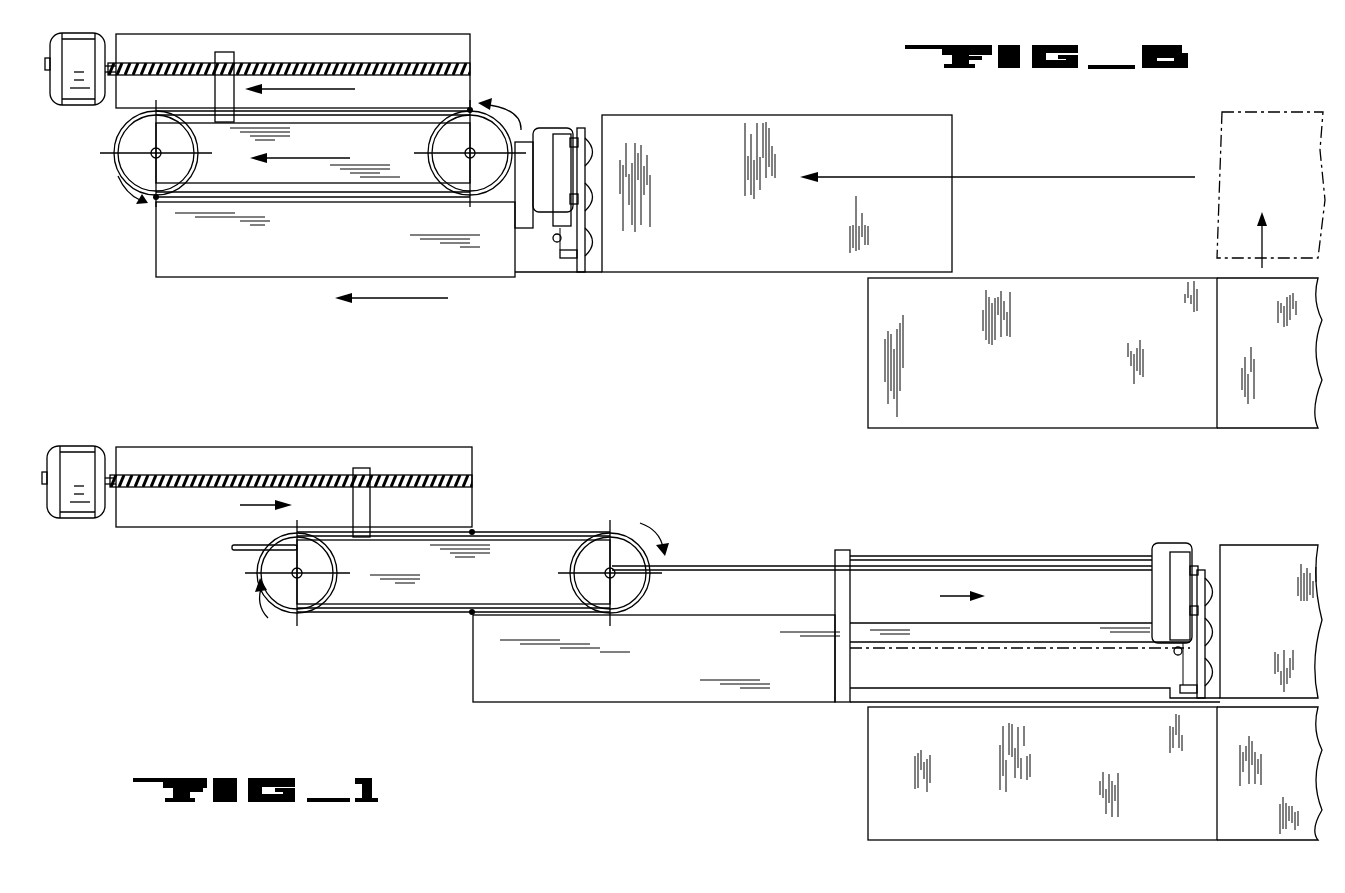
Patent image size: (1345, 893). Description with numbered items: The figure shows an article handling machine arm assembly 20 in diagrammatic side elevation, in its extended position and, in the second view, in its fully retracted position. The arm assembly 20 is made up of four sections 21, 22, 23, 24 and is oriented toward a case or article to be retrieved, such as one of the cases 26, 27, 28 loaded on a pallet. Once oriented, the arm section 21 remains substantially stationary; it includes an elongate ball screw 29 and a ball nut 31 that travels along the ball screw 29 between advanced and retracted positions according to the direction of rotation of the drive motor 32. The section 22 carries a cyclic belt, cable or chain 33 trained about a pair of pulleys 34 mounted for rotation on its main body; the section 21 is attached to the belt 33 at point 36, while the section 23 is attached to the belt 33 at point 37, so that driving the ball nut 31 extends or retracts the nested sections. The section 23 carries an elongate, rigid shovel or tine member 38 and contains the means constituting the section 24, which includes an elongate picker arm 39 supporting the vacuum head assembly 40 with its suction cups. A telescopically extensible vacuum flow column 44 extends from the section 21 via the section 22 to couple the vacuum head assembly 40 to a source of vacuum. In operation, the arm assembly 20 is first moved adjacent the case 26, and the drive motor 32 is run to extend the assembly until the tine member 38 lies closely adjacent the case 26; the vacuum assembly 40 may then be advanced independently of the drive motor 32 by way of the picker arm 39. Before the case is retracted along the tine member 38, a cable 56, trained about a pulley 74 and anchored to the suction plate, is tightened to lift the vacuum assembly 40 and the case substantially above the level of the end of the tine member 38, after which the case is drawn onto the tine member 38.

In FIG. 6, the arm assembly 20 is at (160, 296).
In FIG. 1, the arm assembly 20 is at (250, 660).
In FIG. 6, the arm section 21 is at (480, 80).
In FIG. 1, the arm section 21 is at (450, 438).
In FIG. 6, the section 22 is at (380, 149).
In FIG. 1, the section 22 is at (535, 589).
In FIG. 6, the section 23 is at (348, 246).
In FIG. 1, the section 23 is at (653, 659).
In FIG. 1, the section 24 is at (1032, 632).
In FIG. 6, the case 26 is at (694, 250).
In FIG. 1, the case 26 is at (1290, 632).
In FIG. 6, the case 27 is at (1083, 346).
In FIG. 1, the case 27 is at (1145, 759).
In FIG. 6, the case 28 is at (1303, 386).
In FIG. 1, the case 28 is at (1305, 809).
In FIG. 6, the ball screw 29 is at (178, 62).
In FIG. 1, the ball screw 29 is at (213, 477).
In FIG. 6, the ball nut 31 is at (268, 60).
In FIG. 1, the ball nut 31 is at (372, 502).
In FIG. 6, the drive motor 32 is at (80, 106).
In FIG. 1, the drive motor 32 is at (85, 446).
In FIG. 1, the belt 33 is at (533, 533).
In FIG. 6, the pulleys 34 is at (504, 105).
In FIG. 1, the pulleys 34 is at (258, 557).
In FIG. 1, the attachment point 36 is at (474, 531).
In FIG. 1, the attachment point 37 is at (470, 615).
In FIG. 1, the tine member 38 is at (940, 688).
In FIG. 1, the picker arm 39 is at (903, 632).
In FIG. 6, the vacuum head assembly 40 is at (582, 124).
In FIG. 1, the vacuum head assembly 40 is at (1202, 562).
In FIG. 1, the vacuum flow column 44 is at (1014, 550).
In FIG. 1, the cable 56 is at (1070, 652).
In FIG. 1, the pulley 74 is at (1174, 652).